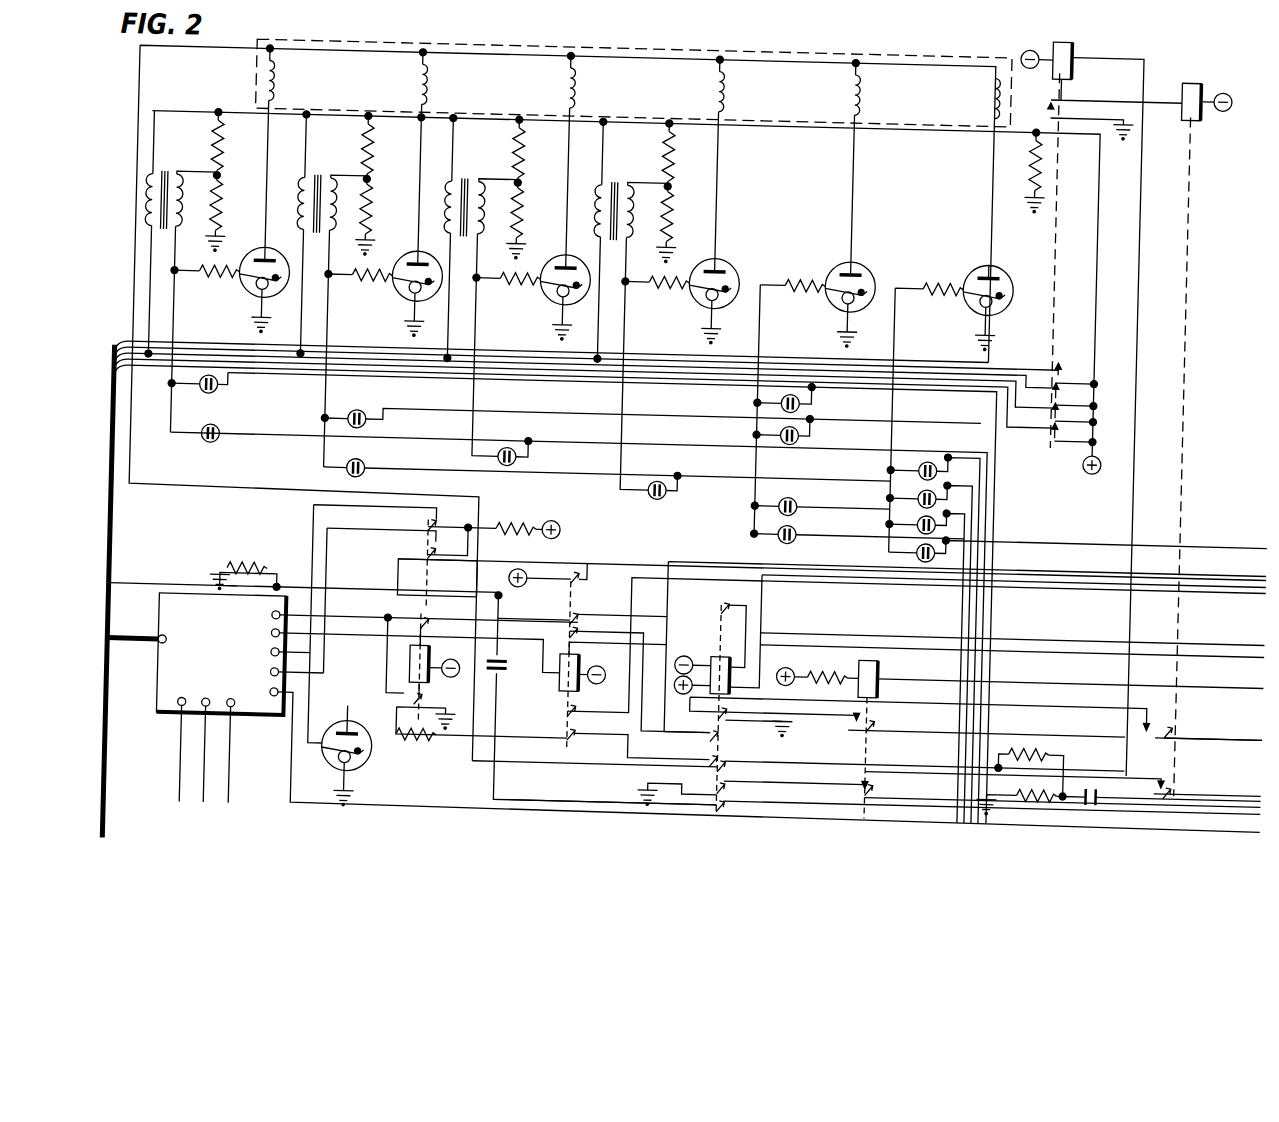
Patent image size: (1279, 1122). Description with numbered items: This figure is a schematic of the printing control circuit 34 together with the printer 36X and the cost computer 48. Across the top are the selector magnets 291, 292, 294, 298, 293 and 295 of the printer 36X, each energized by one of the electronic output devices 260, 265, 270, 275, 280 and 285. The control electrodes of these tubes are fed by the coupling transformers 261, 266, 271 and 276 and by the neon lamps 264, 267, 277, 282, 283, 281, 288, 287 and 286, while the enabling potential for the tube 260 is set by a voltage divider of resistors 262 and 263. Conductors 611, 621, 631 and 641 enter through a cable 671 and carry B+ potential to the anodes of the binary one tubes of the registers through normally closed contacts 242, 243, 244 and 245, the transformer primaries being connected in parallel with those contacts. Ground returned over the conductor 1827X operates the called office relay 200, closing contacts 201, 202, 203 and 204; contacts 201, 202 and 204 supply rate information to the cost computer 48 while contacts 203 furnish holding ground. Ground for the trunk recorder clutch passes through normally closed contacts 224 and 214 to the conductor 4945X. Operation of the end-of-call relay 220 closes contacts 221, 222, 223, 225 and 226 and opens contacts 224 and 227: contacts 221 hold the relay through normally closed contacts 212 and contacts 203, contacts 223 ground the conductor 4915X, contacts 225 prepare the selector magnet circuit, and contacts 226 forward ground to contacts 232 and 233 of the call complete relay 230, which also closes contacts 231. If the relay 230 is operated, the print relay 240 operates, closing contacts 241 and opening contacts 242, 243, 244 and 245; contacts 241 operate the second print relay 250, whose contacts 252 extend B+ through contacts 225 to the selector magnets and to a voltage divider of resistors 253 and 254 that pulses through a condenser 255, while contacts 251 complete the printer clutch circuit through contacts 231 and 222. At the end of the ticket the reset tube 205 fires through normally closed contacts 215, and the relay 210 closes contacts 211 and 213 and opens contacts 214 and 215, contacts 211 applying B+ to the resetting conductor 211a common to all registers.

The printing control circuit 34 is at (798, 30).
The printer 36X is at (255, 83).
The selector magnet 291 is at (274, 82).
The selector magnet 292 is at (428, 85).
The selector magnet 294 is at (576, 86).
The selector magnet 298 is at (726, 90).
The selector magnet 293 is at (862, 96).
The selector magnet 295 is at (988, 92).
The print relay 240 is at (1074, 34).
The contacts 241 is at (1044, 90).
The second print relay 250 is at (1196, 96).
The coupling transformer 261 is at (186, 176).
The resistor 262 is at (212, 163).
The resistor 263 is at (212, 211).
The coupling transformer 266 is at (322, 170).
The coupling transformer 271 is at (470, 174).
The coupling transformer 276 is at (616, 184).
The electronic output device 260 is at (247, 288).
The electronic output device 265 is at (400, 294).
The electronic output device 270 is at (548, 293).
The electronic output device 275 is at (693, 291).
The electronic output device 280 is at (828, 291).
The electronic output device 285 is at (970, 290).
The conductor 611 is at (172, 366).
The conductor 621 is at (512, 372).
The conductor 631 is at (553, 342).
The conductor 641 is at (688, 346).
The cable 671 is at (130, 512).
The neon lamp 264 is at (226, 384).
The neon lamp 267 is at (378, 458).
The neon lamp 277 is at (681, 475).
The neon lamp 282 is at (812, 386).
The neon lamp 283 is at (797, 482).
The neon lamp 281 is at (805, 516).
The neon lamp 288 is at (903, 458).
The neon lamp 287 is at (914, 488).
The neon lamp 286 is at (912, 528).
The contacts 242 is at (1076, 348).
The contacts 243 is at (1106, 370).
The contacts 244 is at (1106, 396).
The contacts 245 is at (1062, 410).
The cost computer 48 is at (172, 690).
The resetting conductor 211a is at (392, 580).
The contacts 201 is at (432, 514).
The contacts 202 is at (430, 540).
The contacts 203 is at (442, 606).
The called office relay 200 is at (446, 672).
The contacts 204 is at (402, 692).
The reset tube 205 is at (388, 750).
The conductor 1827X is at (600, 550).
The contacts 211 is at (594, 572).
The contacts 212 is at (582, 604).
The contacts 213 is at (594, 618).
The relay 210 is at (572, 670).
The contacts 214 is at (574, 702).
The contacts 215 is at (582, 734).
The conductor 4915X is at (746, 548).
The contacts 221 is at (734, 590).
The end-of-call relay 220 is at (762, 654).
The contacts 222 is at (760, 698).
The contact 223 is at (686, 747).
The contacts 224 is at (770, 736).
The contacts 225 is at (744, 762).
The contacts 226 is at (744, 782).
The contacts 227 is at (770, 794).
The call complete relay 230 is at (882, 650).
The contacts 231 is at (882, 706).
The contacts 232 is at (886, 766).
The contacts 233 is at (880, 776).
The conductor 4945X is at (1059, 598).
The contacts 251 is at (1172, 712).
The contacts 252 is at (1186, 758).
The resistor 253 is at (1074, 728).
The resistor 254 is at (1046, 780).
The condenser 255 is at (1120, 772).